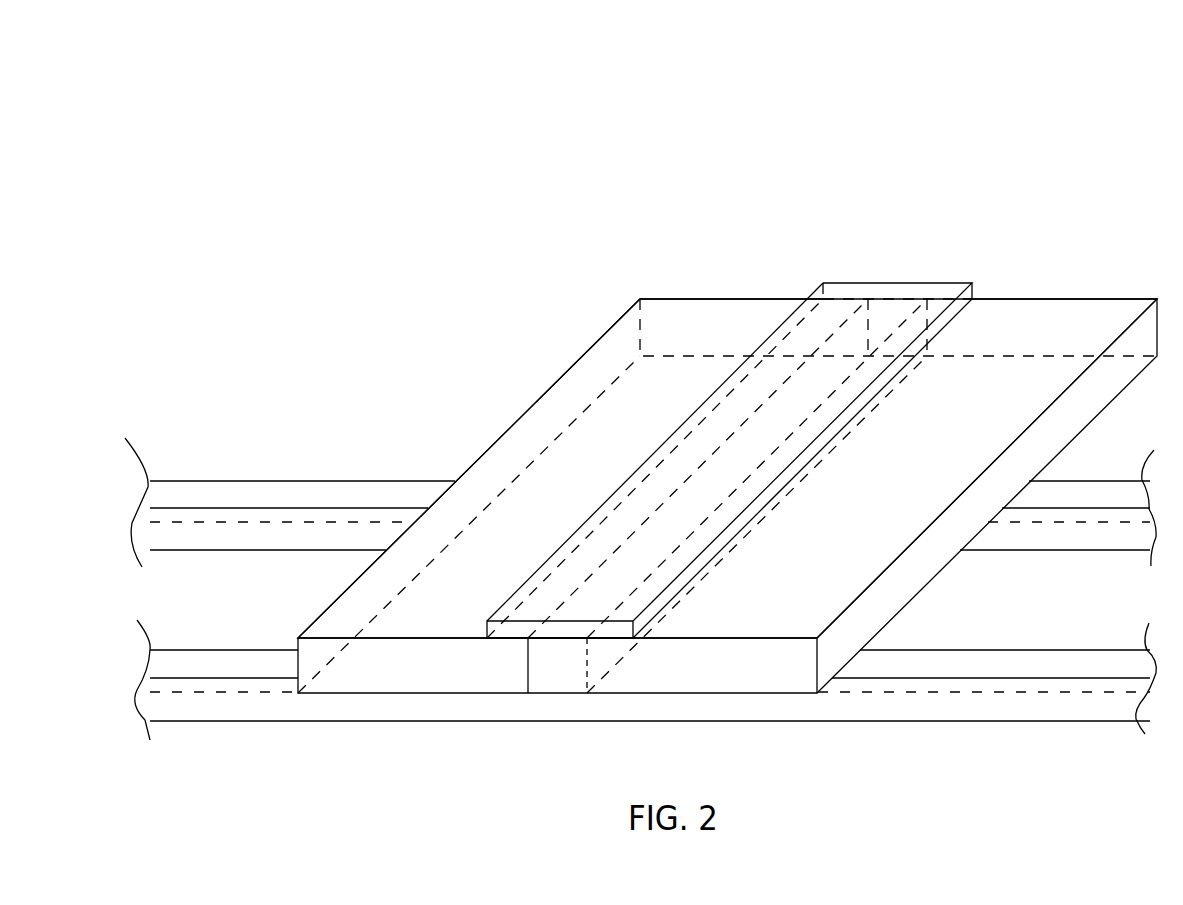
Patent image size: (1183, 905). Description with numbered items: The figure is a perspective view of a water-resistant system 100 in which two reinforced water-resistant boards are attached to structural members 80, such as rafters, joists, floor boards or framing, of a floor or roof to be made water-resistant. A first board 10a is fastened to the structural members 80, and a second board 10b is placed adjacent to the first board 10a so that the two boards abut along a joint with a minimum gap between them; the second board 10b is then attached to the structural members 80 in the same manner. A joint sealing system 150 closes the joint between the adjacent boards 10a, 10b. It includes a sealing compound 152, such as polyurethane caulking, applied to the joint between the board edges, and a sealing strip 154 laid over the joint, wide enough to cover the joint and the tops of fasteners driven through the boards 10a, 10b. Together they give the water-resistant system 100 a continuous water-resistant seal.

The water-resistant system 100 is at (947, 72).
The first board 10a is at (680, 388).
The second board 10b is at (1023, 395).
The joint sealing system 150 is at (907, 283).
The sealing compound 152 is at (557, 657).
The sealing strip 154 is at (792, 407).
The structural member 80 is at (263, 670).